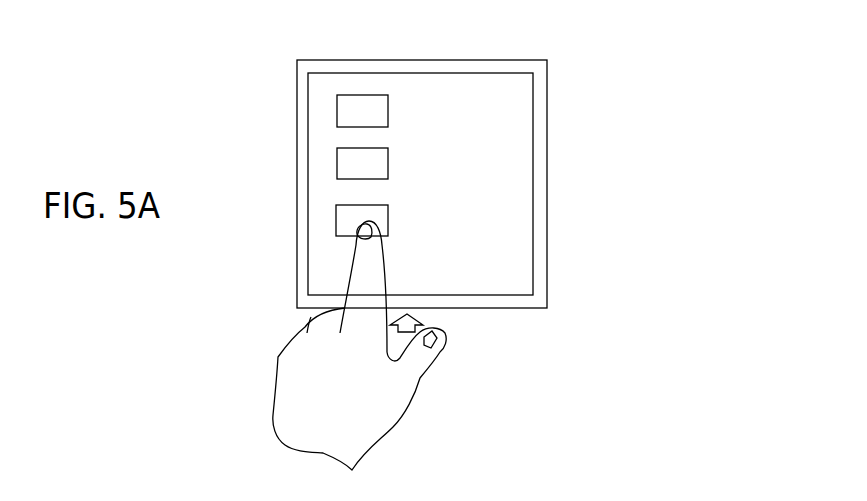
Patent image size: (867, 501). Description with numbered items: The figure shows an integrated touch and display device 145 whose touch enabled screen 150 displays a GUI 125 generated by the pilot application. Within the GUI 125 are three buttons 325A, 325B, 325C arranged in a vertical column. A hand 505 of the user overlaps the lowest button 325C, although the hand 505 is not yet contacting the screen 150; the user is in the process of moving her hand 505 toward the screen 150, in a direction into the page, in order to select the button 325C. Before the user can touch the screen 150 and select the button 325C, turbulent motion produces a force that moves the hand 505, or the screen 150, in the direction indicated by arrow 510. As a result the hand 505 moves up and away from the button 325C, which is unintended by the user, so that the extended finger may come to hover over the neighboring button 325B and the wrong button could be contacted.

The integrated touch and display device 145 is at (477, 60).
The touch screen 150 is at (534, 163).
The GUI 125 is at (503, 253).
The button 325A is at (388, 107).
The button 325B is at (388, 164).
The button 325C is at (388, 214).
The arrow 510 is at (423, 318).
The hand 505 is at (277, 388).